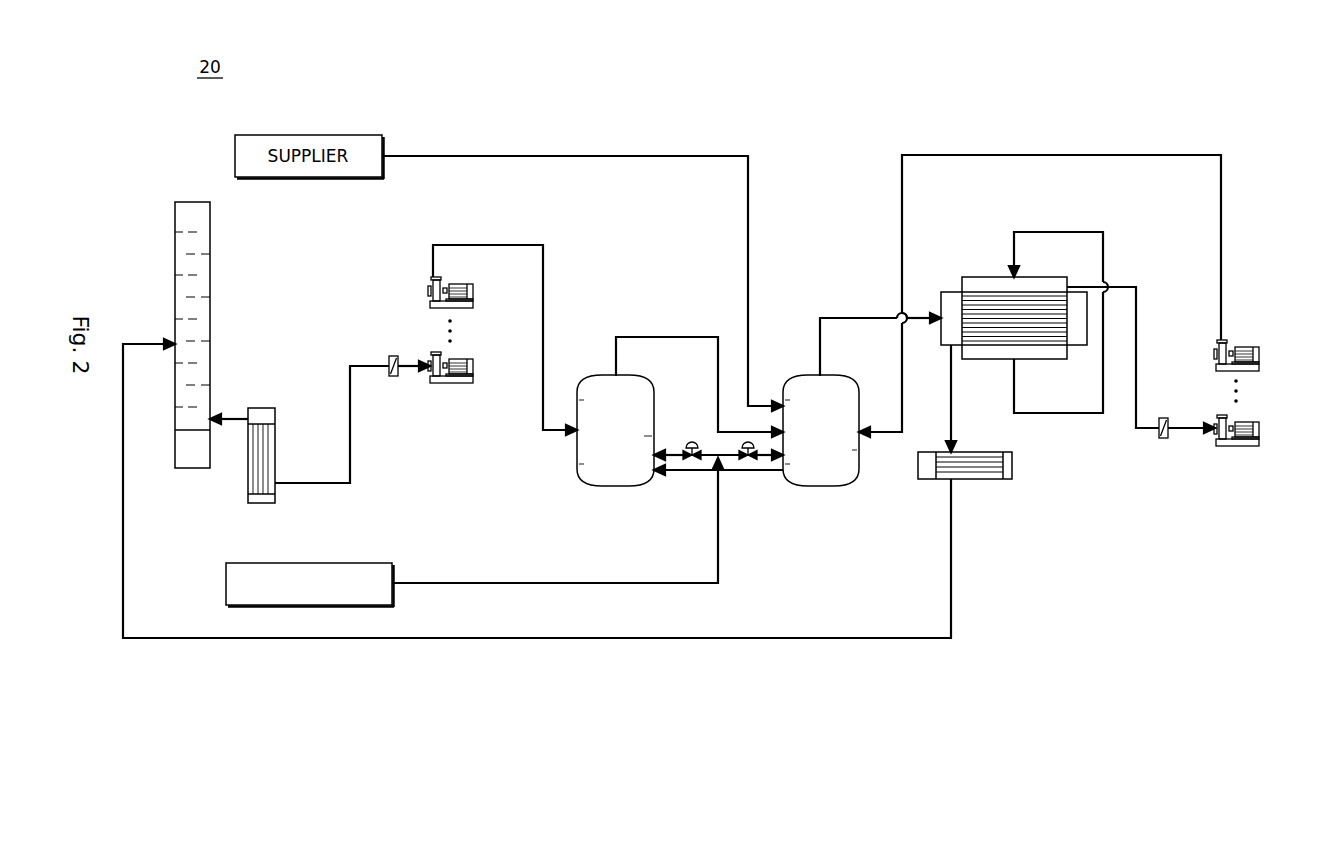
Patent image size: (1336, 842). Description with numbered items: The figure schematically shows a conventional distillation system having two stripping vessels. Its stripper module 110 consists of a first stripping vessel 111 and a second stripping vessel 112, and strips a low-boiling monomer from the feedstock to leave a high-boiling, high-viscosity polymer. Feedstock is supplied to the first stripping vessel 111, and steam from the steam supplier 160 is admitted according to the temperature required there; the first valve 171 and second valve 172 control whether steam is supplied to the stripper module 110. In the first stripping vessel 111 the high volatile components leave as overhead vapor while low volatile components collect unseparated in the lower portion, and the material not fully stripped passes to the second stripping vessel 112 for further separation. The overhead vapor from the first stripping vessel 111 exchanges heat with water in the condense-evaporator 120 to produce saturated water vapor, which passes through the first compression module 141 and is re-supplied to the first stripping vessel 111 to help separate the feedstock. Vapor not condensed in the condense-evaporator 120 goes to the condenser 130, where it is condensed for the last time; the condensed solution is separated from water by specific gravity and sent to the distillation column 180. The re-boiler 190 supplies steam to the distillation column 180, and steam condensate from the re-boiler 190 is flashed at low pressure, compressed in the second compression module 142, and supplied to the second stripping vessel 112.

The stripper module 110 is at (718, 483).
The first stripping vessel 111 is at (821, 463).
The second stripping vessel 112 is at (637, 487).
The condense-evaporator 120 is at (945, 292).
The condenser 130 is at (987, 452).
The first compression module 141 is at (1259, 352).
The second compression module 142 is at (459, 383).
The steam supplier 160 is at (393, 572).
The first valve 171 is at (748, 462).
The second valve 172 is at (690, 462).
The distillation column 180 is at (210, 275).
The re-boiler 190 is at (262, 408).